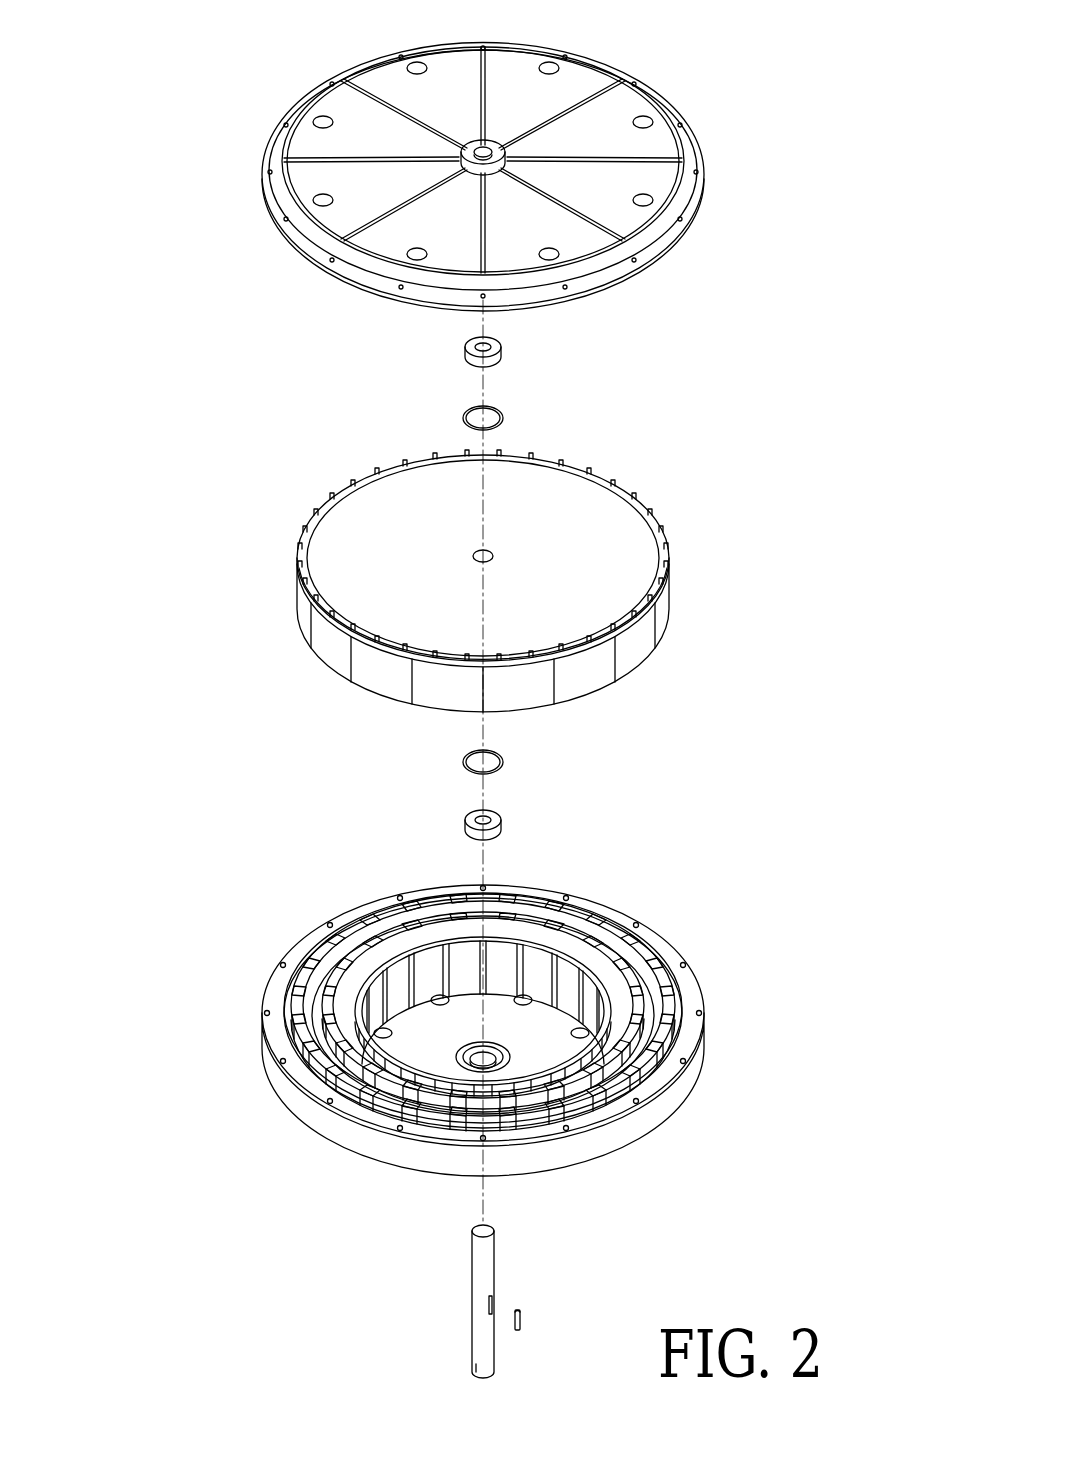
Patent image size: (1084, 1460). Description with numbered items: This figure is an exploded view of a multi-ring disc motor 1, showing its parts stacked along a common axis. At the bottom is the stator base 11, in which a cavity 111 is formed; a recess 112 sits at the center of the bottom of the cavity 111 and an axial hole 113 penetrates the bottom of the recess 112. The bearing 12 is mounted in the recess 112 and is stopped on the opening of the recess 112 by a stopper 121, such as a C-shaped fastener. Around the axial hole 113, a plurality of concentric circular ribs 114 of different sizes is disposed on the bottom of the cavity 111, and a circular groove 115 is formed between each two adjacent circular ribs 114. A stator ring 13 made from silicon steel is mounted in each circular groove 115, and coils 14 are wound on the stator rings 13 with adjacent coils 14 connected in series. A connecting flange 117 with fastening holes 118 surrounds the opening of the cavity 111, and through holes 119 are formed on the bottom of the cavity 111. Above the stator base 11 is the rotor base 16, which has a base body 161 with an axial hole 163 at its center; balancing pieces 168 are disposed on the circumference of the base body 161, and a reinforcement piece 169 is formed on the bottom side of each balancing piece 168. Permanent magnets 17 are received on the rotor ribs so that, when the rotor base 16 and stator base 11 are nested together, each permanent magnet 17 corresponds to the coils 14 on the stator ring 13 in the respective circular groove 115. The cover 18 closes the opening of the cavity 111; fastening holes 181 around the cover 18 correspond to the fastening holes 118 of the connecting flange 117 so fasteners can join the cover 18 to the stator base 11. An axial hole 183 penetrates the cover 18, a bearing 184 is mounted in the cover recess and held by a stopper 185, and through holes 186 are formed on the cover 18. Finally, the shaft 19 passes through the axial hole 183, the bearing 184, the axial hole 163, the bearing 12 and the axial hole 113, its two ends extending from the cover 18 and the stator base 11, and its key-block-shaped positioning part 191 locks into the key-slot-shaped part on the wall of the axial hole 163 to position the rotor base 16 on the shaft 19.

The multi-ring disc motor 1 is at (297, 415).
The stator base 11 is at (501, 1036).
The bearing 12 is at (466, 820).
The stator ring 13 is at (295, 952).
The coil 14 is at (371, 941).
The rotor base 16 is at (476, 551).
The permanent magnet 17 is at (585, 683).
The cover 18 is at (500, 157).
The shaft 19 is at (483, 1333).
The cavity 111 is at (662, 942).
The recess 112 is at (492, 1068).
The axial hole 113 is at (478, 1068).
The circular rib 114 is at (283, 1043).
The circular groove 115 is at (630, 1082).
The connecting flange 117 is at (687, 980).
The fastening hole 118 is at (702, 1014).
The through hole 119 is at (539, 1020).
The stopper 121 is at (502, 762).
The base body 161 is at (590, 520).
The axial hole 163 is at (476, 558).
The balancing piece 168 is at (300, 582).
The reinforcement piece 169 is at (340, 632).
The fastening hole 181 is at (690, 212).
The axial hole 183 is at (478, 148).
The bearing 184 is at (502, 352).
The stopper 185 is at (505, 418).
The through hole 186 is at (318, 122).
The key-block-shaped positioning part 191 is at (521, 1318).